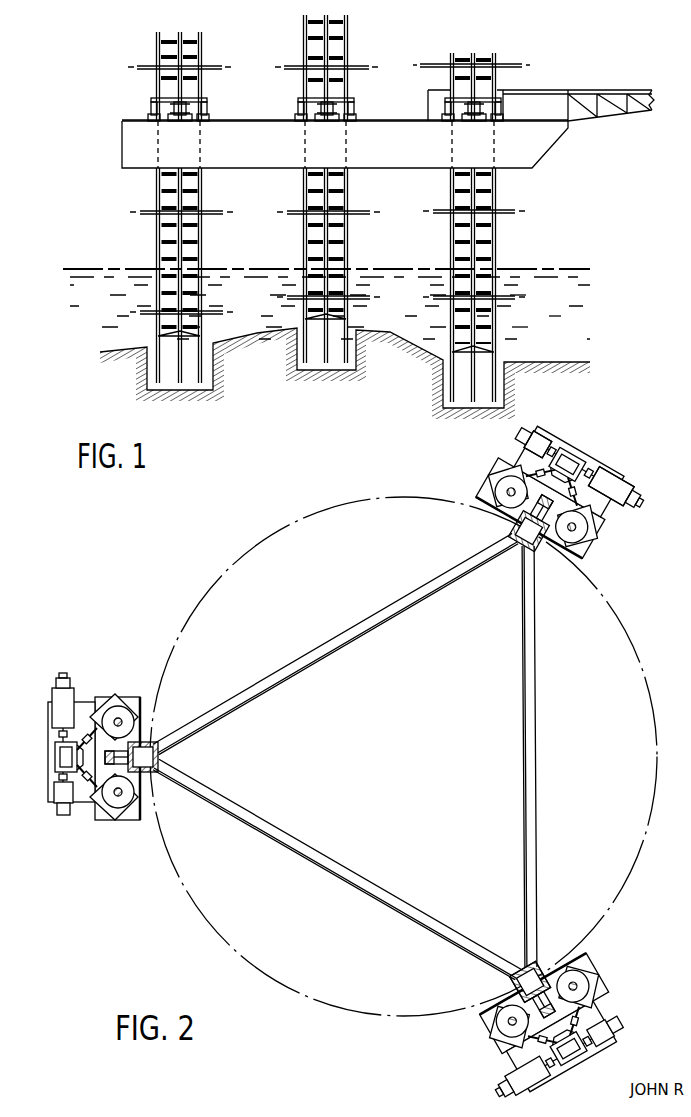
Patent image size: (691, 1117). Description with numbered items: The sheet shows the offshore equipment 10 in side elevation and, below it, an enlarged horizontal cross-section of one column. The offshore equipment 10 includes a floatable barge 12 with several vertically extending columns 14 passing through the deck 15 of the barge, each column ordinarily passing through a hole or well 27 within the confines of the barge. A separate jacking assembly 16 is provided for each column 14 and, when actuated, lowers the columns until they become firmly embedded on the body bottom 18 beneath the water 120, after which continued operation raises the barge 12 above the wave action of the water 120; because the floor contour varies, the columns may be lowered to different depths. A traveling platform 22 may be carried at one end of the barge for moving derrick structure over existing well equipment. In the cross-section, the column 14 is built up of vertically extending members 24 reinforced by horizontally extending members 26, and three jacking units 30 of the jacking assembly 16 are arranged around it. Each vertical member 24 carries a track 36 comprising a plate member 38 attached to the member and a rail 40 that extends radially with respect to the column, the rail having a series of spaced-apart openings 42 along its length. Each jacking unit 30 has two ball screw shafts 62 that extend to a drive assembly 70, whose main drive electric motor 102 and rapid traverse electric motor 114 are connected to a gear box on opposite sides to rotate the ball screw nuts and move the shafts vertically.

In FIG. 1, the offshore equipment 10 is at (102, 72).
In FIG. 1, the floatable barge 12 is at (122, 152).
In FIG. 1, the column 14 is at (152, 50).
In FIG. 2, the column 14 is at (346, 761).
In FIG. 1, the deck 15 is at (224, 122).
In FIG. 1, the jacking assembly 16 is at (152, 102).
In FIG. 1, the body bottom 18 is at (540, 361).
In FIG. 1, the traveling platform 22 is at (603, 72).
In FIG. 2, the vertically extending member 24 is at (543, 542).
In FIG. 2, the horizontally extending member 26 is at (389, 622).
In FIG. 1, the well 27 is at (198, 157).
In FIG. 2, the well 27 is at (231, 562).
In FIG. 2, the jack unit 30 is at (646, 452).
In FIG. 2, the track 36 is at (545, 967).
In FIG. 2, the plate member 38 is at (518, 523).
In FIG. 2, the rail 40 is at (110, 758).
In FIG. 2, the opening 42 is at (563, 998).
In FIG. 2, the ball screw shaft 62 is at (503, 492).
In FIG. 2, the drive assembly 70 is at (500, 1077).
In FIG. 2, the main drive electric motor 102 is at (627, 483).
In FIG. 2, the rapid traverse electric motor 114 is at (545, 438).
In FIG. 1, the water 120 is at (553, 278).